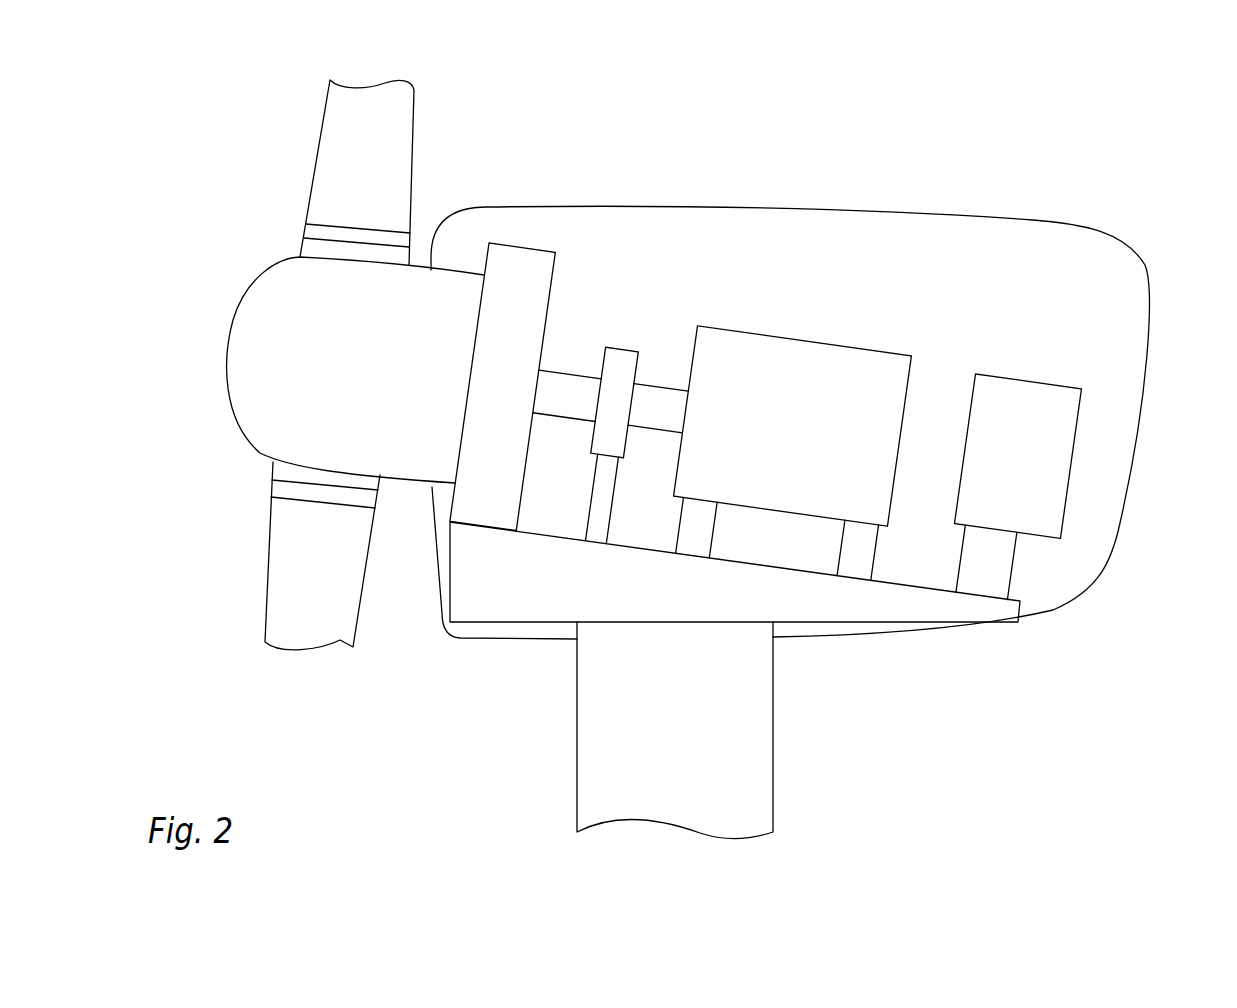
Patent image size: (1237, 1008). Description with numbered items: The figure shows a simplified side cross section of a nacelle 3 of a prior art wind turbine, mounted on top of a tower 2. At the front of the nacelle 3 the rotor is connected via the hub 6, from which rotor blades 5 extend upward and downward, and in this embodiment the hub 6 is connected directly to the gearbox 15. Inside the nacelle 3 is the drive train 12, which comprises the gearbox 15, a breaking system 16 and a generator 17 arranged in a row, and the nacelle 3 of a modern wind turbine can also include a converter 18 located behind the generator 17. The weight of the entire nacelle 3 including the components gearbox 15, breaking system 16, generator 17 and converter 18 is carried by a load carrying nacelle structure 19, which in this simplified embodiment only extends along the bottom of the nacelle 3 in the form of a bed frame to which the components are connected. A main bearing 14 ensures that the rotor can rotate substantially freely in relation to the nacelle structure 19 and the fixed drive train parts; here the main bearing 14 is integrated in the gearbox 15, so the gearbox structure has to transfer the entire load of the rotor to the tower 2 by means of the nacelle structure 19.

The tower 2 is at (745, 795).
The nacelle 3 is at (1190, 226).
The rotor blade 5 is at (381, 165).
The hub 6 is at (313, 340).
The drive train 12 is at (693, 246).
The main bearing 14 is at (488, 480).
The gearbox 15 is at (518, 277).
The breaking system 16 is at (622, 367).
The generator 17 is at (760, 378).
The converter 18 is at (1036, 423).
The nacelle structure 19 is at (857, 598).